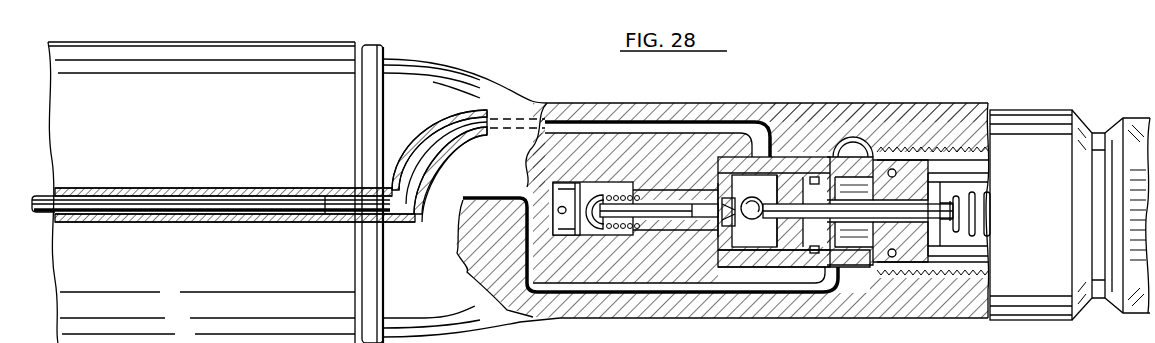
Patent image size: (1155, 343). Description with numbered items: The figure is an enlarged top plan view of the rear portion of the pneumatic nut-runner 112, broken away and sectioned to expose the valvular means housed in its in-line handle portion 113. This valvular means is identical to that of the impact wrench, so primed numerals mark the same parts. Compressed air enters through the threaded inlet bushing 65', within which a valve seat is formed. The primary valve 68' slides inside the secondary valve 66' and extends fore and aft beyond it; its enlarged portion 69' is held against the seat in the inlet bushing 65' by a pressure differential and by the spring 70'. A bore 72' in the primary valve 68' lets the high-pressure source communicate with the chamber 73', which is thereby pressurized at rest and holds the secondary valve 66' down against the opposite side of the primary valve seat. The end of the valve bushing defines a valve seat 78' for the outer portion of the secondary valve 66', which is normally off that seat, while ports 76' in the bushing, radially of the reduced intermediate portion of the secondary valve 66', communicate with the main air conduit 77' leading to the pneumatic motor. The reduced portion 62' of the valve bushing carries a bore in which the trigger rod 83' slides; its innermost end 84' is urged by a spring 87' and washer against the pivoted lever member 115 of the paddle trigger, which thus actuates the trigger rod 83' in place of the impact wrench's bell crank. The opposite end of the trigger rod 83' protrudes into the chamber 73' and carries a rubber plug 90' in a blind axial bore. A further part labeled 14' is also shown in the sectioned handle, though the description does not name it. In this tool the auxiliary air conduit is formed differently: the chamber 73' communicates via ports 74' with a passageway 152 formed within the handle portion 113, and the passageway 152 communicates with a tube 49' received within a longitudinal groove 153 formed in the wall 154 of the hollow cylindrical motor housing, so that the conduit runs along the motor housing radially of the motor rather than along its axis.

The pneumatic nut-runner 112 is at (124, 42).
The tube 49' is at (235, 191).
The wall 154 is at (52, 233).
The longitudinal groove 153 is at (338, 214).
The passageway 152 is at (604, 105).
The main air conduit 77' is at (647, 268).
The pivoted lever member 115 is at (570, 236).
The innermost end of trigger rod 84' is at (579, 190).
The spring 87' is at (616, 187).
The reduced portion of valve bushing 62' is at (675, 191).
The trigger rod 83' is at (659, 146).
The ports 74' is at (774, 172).
The primary valve 68' is at (847, 140).
The chamber 73' is at (726, 269).
The rubber plug 90' is at (745, 258).
The secondary valve 66' is at (846, 126).
The valve seat 78' is at (861, 173).
The valve body 14' is at (931, 170).
The enlarged portion of primary valve 69' is at (933, 300).
The spring 70' is at (982, 214).
The inlet bushing 65' is at (981, 216).
The bore of primary valve 72' is at (794, 294).
The ports 76' is at (843, 285).
The handle portion 113 is at (1032, 108).